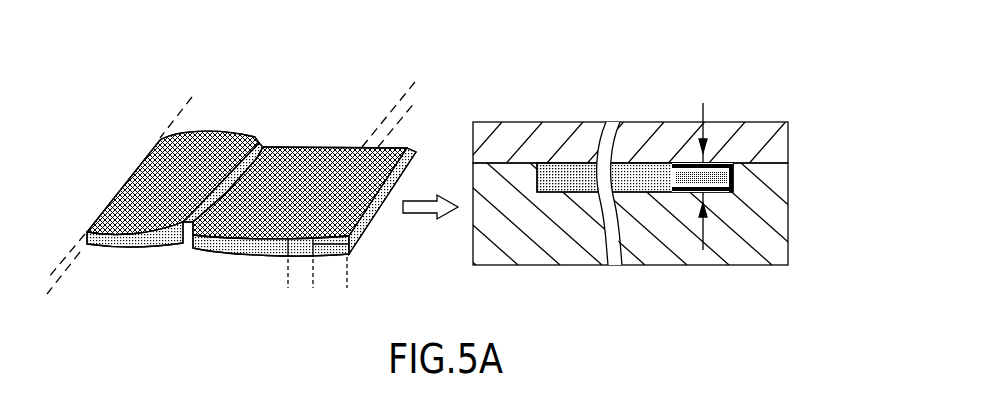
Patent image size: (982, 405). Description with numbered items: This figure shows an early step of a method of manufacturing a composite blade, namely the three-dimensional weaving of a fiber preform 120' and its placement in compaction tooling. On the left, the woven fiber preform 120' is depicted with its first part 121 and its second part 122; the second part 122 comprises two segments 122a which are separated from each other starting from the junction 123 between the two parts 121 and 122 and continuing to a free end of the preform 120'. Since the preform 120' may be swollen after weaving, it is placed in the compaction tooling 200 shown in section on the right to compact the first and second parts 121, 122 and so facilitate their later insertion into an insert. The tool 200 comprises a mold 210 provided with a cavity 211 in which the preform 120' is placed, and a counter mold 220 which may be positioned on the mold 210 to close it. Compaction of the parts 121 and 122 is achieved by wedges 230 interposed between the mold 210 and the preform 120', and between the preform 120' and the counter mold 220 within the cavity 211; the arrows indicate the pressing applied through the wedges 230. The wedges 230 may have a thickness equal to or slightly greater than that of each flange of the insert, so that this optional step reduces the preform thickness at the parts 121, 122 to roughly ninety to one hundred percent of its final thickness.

The fiber preform 120' is at (354, 200).
The first part 121 is at (303, 303).
The second part 122 is at (313, 288).
The segments 122a is at (366, 222).
The junction 123 is at (317, 229).
The compaction tooling 200 is at (587, 163).
The mold 210 is at (753, 256).
The cavity 211 is at (616, 194).
The counter mold 220 is at (770, 134).
The wedges 230 is at (737, 165).